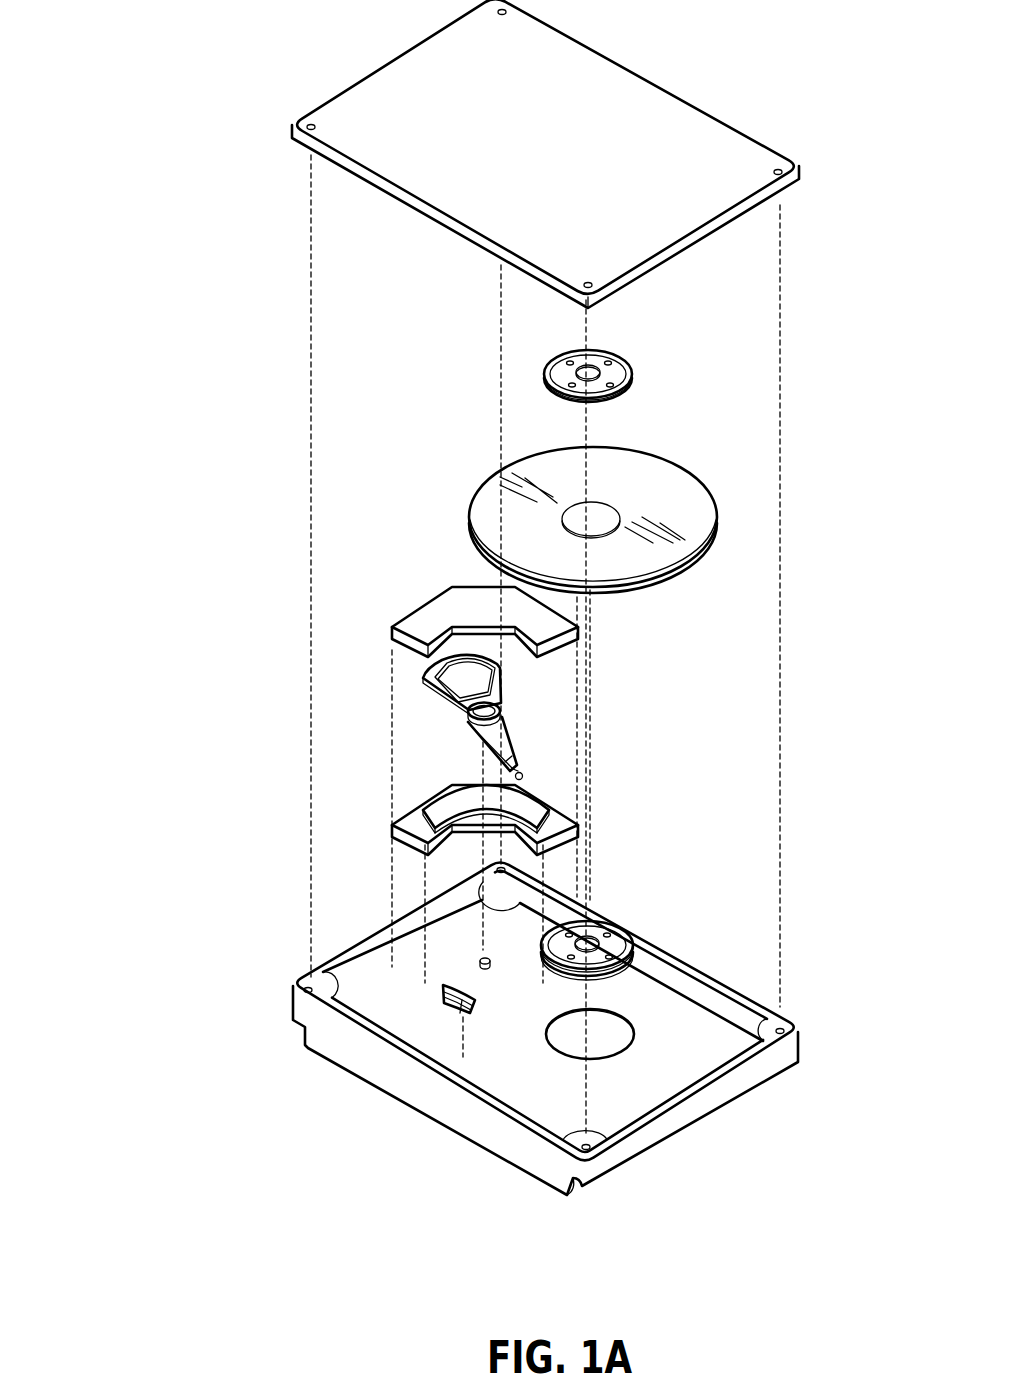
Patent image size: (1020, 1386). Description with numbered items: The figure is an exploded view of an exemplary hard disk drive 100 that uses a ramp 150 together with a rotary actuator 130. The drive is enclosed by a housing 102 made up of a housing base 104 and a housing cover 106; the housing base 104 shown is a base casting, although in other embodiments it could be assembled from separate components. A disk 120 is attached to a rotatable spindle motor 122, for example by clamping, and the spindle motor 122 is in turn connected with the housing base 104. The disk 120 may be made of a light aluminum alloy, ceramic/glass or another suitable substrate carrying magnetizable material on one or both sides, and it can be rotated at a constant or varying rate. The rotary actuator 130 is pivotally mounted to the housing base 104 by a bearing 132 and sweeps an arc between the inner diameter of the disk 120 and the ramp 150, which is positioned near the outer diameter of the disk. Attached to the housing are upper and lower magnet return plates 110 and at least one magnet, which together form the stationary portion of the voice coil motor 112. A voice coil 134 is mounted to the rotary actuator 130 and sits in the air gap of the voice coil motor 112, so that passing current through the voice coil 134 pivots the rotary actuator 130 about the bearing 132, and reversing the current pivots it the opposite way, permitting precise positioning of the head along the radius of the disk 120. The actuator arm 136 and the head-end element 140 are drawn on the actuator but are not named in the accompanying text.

The hard disk drive 100 is at (826, 506).
The housing 102 is at (249, 164).
The housing base 104 is at (408, 1075).
The housing cover 106 is at (620, 102).
The upper and lower magnet return plates 110 is at (436, 802).
The voice coil motor 112 is at (428, 580).
The disk 120 is at (675, 490).
The spindle motor 122 is at (620, 368).
The rotary actuator 130 is at (544, 698).
The bearing 132 is at (502, 712).
The voice coil 134 is at (427, 684).
The actuator arm 136 is at (500, 738).
The head / slider 140 is at (524, 778).
The ramp 150 is at (437, 1016).